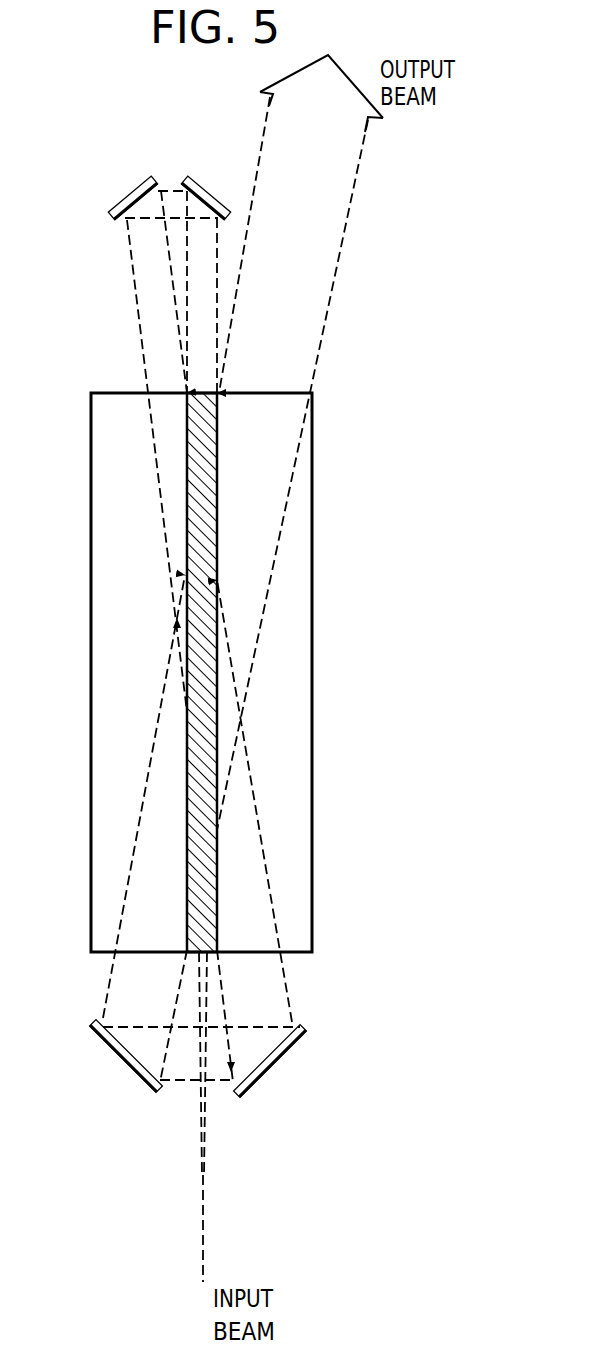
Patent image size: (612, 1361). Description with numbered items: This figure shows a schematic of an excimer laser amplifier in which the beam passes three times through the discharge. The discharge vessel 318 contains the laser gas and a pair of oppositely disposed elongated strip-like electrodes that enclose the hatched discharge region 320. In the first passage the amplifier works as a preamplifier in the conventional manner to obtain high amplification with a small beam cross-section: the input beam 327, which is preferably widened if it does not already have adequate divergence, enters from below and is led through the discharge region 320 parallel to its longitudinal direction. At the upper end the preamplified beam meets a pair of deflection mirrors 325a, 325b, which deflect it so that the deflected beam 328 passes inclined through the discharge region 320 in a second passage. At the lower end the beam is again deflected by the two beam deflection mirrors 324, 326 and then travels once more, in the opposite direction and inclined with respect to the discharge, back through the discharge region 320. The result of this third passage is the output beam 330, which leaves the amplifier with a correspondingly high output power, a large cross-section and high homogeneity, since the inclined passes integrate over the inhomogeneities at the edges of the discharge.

The discharge vessel 318 is at (313, 630).
The discharge region 320 is at (196, 612).
The beam deflection mirror 324 is at (274, 1055).
The deflection mirror 325a is at (192, 183).
The deflection mirror 325b is at (132, 193).
The beam deflection mirror 326 is at (118, 1048).
The input beam 327 is at (205, 1175).
The deflected beam 328 is at (137, 255).
The output beam 330 is at (327, 233).